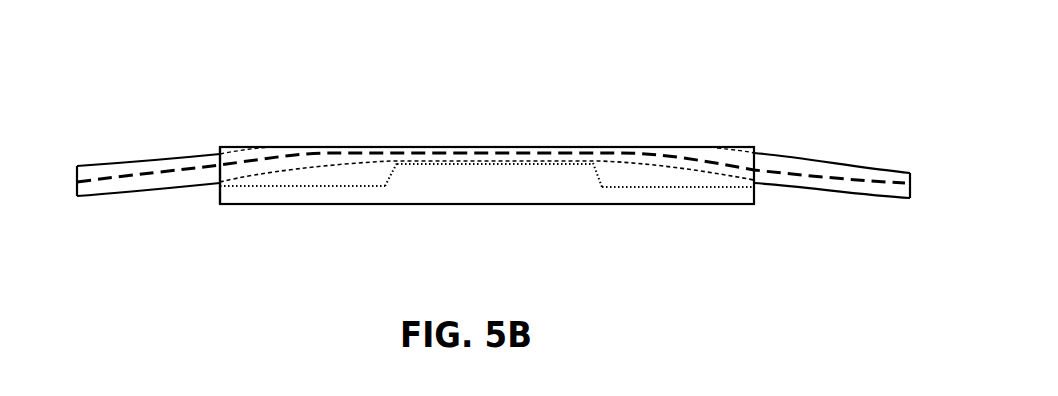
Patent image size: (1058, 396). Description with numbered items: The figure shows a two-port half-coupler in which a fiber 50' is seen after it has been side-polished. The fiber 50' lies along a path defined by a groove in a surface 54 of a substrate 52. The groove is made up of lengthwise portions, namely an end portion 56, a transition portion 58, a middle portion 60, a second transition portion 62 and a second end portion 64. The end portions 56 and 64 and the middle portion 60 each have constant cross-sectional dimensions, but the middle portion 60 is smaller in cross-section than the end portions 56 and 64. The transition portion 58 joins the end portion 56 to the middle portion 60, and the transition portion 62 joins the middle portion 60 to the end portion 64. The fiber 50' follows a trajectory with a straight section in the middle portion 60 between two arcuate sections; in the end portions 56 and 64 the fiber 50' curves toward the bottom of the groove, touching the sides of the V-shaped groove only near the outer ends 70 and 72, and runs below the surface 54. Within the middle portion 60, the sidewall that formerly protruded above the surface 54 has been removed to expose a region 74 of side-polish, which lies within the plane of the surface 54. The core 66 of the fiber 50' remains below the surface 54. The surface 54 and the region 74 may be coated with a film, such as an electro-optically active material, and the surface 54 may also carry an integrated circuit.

The fiber after side-polishing 50' is at (493, 149).
The substrate 52 is at (562, 192).
The surface of substrate 54 is at (244, 138).
The end groove portion 56 is at (300, 185).
The transition portion 58 is at (388, 180).
The middle groove portion 60 is at (467, 163).
The transition portion 62 is at (598, 173).
The end groove portion 64 is at (668, 190).
The core of fiber 66 is at (545, 151).
The outer end of groove portion 70 is at (223, 133).
The outer end of groove portion 72 is at (738, 135).
The region of side-polish 74 is at (493, 140).